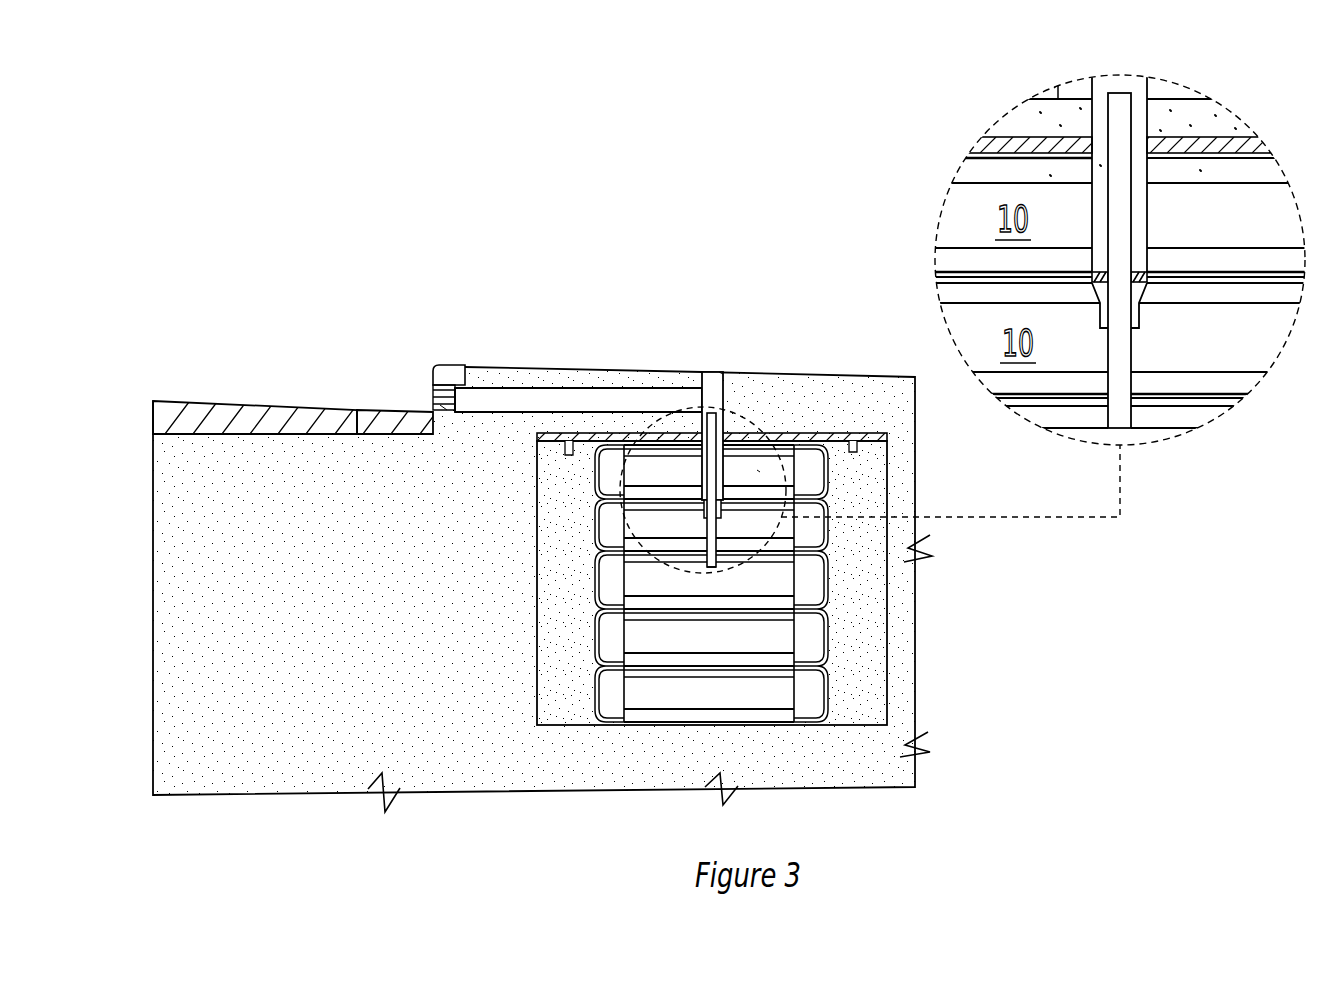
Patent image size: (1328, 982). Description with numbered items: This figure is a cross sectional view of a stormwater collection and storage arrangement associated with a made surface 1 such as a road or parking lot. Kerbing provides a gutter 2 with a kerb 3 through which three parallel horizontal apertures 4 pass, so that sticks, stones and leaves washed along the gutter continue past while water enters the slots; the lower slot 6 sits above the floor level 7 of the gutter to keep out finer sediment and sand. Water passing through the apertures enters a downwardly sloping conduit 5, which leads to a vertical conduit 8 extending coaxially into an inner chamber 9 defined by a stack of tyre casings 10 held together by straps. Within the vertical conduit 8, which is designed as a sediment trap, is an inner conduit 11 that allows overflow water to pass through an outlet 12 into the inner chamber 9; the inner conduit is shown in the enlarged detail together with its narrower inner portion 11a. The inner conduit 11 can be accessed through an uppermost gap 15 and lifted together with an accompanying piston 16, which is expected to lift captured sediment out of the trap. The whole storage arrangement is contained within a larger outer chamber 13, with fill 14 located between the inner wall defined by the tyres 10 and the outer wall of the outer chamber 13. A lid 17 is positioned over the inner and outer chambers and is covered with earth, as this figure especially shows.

The made surface 1 is at (263, 405).
The gutter 2 is at (398, 390).
The kerb 3 is at (436, 398).
The apertures 4 is at (455, 395).
The downwardly sloping conduit 5 is at (597, 400).
The lower slot 6 is at (447, 400).
The floor level 7 is at (370, 408).
The vertical conduit 8 is at (722, 407).
The inner chamber 9 is at (757, 470).
The tyre casings 10 is at (832, 523).
The inner conduit 11 is at (702, 372).
The inner riser tube 11a is at (628, 531).
The outlet 12 is at (712, 562).
The outer chamber 13 is at (889, 656).
The fill 14 is at (856, 627).
The uppermost gap 15 is at (719, 372).
The piston 16 is at (1145, 272).
The lid 17 is at (863, 433).